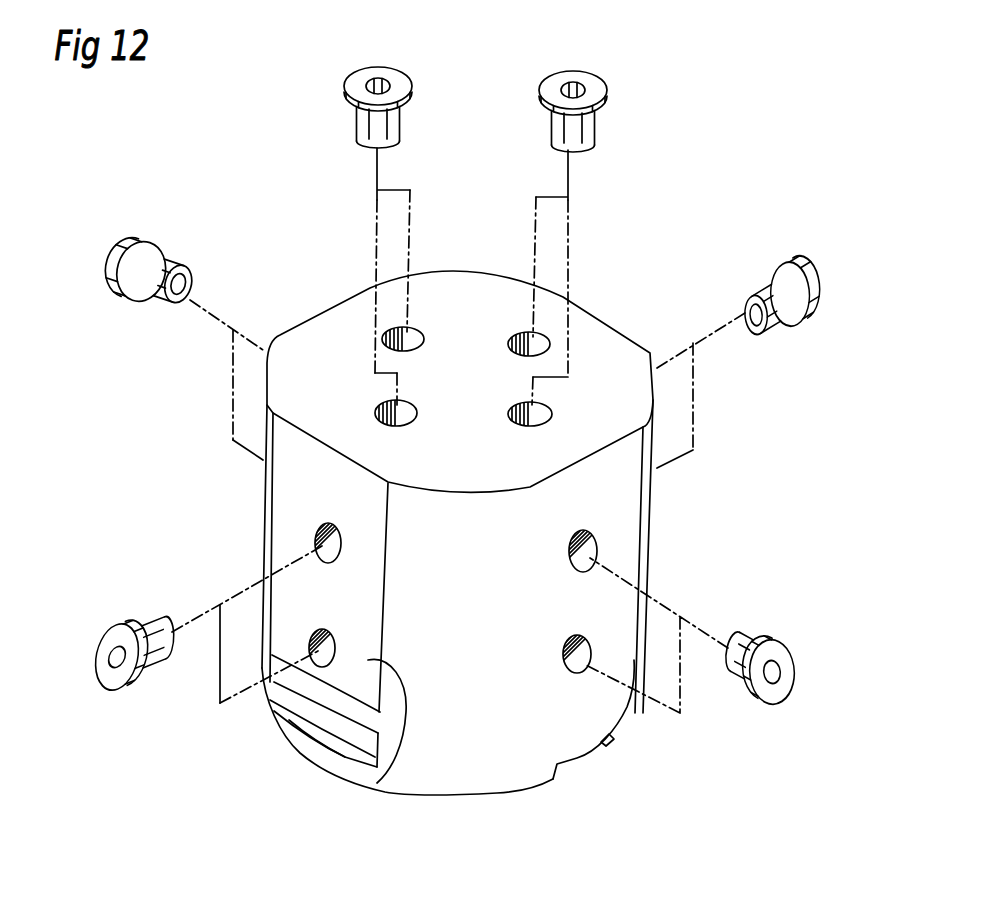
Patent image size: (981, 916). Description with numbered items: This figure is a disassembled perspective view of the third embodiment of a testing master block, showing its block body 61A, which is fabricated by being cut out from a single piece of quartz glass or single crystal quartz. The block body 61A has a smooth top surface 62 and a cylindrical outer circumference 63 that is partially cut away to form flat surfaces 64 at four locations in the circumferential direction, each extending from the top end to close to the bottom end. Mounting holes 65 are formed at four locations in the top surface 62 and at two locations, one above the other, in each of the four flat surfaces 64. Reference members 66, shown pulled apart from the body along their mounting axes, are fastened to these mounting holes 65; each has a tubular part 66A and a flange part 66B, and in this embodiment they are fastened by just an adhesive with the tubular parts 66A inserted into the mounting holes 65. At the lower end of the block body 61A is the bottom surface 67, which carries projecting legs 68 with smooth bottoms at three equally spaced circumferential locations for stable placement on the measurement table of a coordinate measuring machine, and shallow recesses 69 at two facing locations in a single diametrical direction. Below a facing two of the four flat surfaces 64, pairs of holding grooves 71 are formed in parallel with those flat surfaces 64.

The block body 61A is at (563, 790).
The top surface 62 is at (325, 365).
The cylindrical outer circumference 63 is at (488, 270).
The flat surfaces 64 is at (327, 309).
The mounting holes 65 is at (420, 336).
The reference members 66 is at (461, 359).
The tubular parts 66A is at (755, 285).
The flange parts 66B is at (808, 268).
The bottom surface 67 is at (497, 795).
The projecting legs 68 is at (303, 757).
The recesses 69 is at (577, 760).
The holding grooves 71 is at (280, 703).